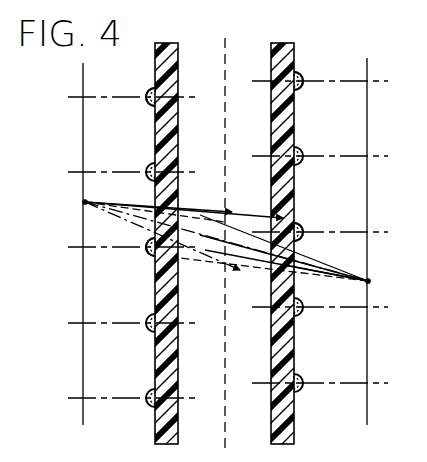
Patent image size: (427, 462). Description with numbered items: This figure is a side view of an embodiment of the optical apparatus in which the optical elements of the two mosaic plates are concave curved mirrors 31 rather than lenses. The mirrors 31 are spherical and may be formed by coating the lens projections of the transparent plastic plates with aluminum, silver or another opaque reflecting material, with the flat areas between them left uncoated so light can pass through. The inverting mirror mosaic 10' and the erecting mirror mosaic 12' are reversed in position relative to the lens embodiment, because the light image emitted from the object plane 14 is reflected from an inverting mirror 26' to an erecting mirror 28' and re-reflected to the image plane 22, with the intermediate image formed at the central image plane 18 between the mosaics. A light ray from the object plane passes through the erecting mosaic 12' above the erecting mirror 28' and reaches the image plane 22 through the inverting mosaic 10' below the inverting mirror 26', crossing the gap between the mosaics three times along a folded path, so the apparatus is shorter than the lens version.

The inverting mirror mosaic 10' is at (284, 241).
The erecting mirror mosaic 12' is at (168, 241).
The object plane 14 is at (83, 188).
The central image plane 18 is at (229, 30).
The image plane 22 is at (367, 197).
The inverting mirror 26' is at (318, 221).
The erecting mirror 28' is at (130, 257).
The concave curved mirrors 31 is at (150, 163).